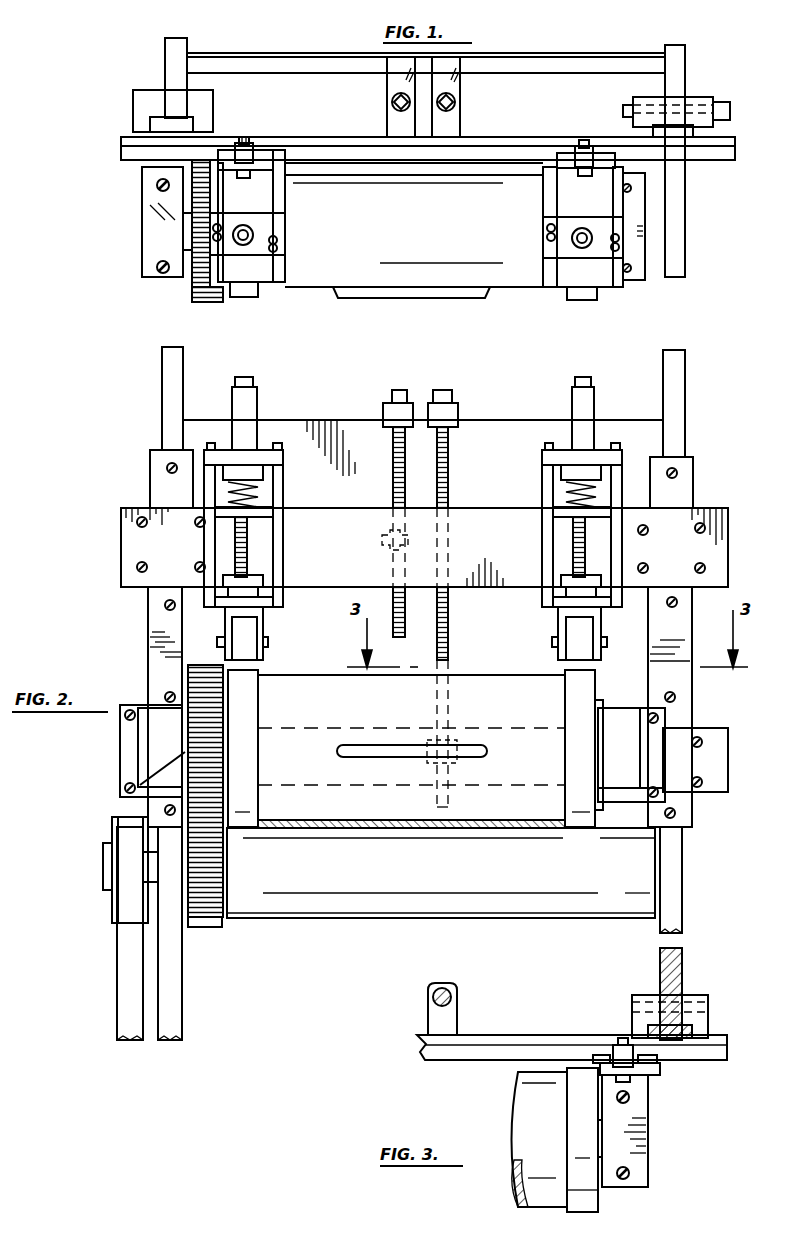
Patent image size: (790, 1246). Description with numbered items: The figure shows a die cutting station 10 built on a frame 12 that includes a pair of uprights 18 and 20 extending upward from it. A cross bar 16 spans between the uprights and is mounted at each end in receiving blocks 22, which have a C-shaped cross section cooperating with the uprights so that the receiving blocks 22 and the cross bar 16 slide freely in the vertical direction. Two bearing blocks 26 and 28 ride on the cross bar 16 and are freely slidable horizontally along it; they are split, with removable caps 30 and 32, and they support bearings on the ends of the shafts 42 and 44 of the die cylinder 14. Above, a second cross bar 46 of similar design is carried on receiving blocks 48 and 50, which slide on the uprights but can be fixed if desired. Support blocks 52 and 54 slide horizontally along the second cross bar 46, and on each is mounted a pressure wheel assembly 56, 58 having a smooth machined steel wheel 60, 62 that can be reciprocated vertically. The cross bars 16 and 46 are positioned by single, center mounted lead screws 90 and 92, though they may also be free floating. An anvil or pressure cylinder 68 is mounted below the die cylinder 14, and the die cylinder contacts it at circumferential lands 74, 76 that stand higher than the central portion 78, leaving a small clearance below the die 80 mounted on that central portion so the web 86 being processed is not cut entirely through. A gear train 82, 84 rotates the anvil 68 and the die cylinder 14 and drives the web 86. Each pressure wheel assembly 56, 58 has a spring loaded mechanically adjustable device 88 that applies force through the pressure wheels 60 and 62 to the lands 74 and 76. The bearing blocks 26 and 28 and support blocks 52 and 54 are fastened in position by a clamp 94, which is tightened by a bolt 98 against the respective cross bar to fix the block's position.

In FIG. 1, the die cutting station 10 is at (688, 44).
In FIG. 2, the die cutting station 10 is at (100, 571).
In FIG. 1, the frame 12 is at (168, 50).
In FIG. 2, the frame 12 is at (170, 372).
In FIG. 3, the frame 12 is at (665, 960).
In FIG. 1, the die cylinder 14 is at (318, 290).
In FIG. 2, the die cylinder 14 is at (300, 682).
In FIG. 3, the die cylinder 14 is at (520, 1125).
In FIG. 2, the cross bar 16 is at (728, 760).
In FIG. 3, the cross bar 16 is at (716, 1060).
In FIG. 1, the upright 18 is at (155, 118).
In FIG. 2, the upright 18 is at (155, 672).
In FIG. 1, the upright 20 is at (690, 132).
In FIG. 2, the upright 20 is at (690, 690).
In FIG. 3, the upright 20 is at (695, 1030).
In FIG. 3, the receiving block 22 is at (700, 995).
In FIG. 2, the bearing block 26 is at (620, 785).
In FIG. 3, the bearing block 26 is at (648, 1085).
In FIG. 2, the bearing block 28 is at (145, 760).
In FIG. 1, the removable cap 30 is at (147, 190).
In FIG. 2, the removable cap 30 is at (145, 733).
In FIG. 1, the removable cap 32 is at (633, 280).
In FIG. 2, the removable cap 32 is at (618, 712).
In FIG. 3, the removable cap 32 is at (640, 1120).
In FIG. 1, the shaft 42 is at (185, 230).
In FIG. 2, the shaft 42 is at (140, 785).
In FIG. 2, the shaft 44 is at (600, 750).
In FIG. 3, the shaft 44 is at (602, 1148).
In FIG. 1, the second cross bar 46 is at (359, 155).
In FIG. 2, the second cross bar 46 is at (712, 553).
In FIG. 1, the receiving block 48 is at (138, 100).
In FIG. 1, the receiving block 50 is at (698, 100).
In FIG. 1, the support block 52 is at (262, 165).
In FIG. 3, the support block 52 is at (626, 1065).
In FIG. 1, the support block 54 is at (567, 165).
In FIG. 1, the pressure wheel assembly 56 is at (287, 239).
In FIG. 2, the pressure wheel assembly 56 is at (260, 399).
In FIG. 1, the pressure wheel assembly 58 is at (541, 229).
In FIG. 2, the pressure wheel assembly 58 is at (594, 394).
In FIG. 2, the pressure wheel 60 is at (245, 625).
In FIG. 2, the pressure wheel 62 is at (557, 626).
In FIG. 2, the anvil or pressure cylinder 68 is at (312, 915).
In FIG. 1, the circumferential land 74 is at (243, 297).
In FIG. 2, the circumferential land 74 is at (252, 758).
In FIG. 1, the circumferential land 76 is at (580, 300).
In FIG. 2, the circumferential land 76 is at (578, 708).
In FIG. 2, the central portion 78 is at (472, 685).
In FIG. 1, the die 80 is at (385, 300).
In FIG. 2, the die 80 is at (365, 750).
In FIG. 2, the gear train 82 is at (210, 928).
In FIG. 1, the gear train 84 is at (195, 297).
In FIG. 2, the gear train 84 is at (195, 668).
In FIG. 2, the web 86 is at (382, 830).
In FIG. 2, the spring loaded mechanically adjustable device 88 is at (572, 394).
In FIG. 1, the lead screw 90 is at (456, 102).
In FIG. 2, the lead screw 90 is at (450, 468).
In FIG. 3, the lead screw 90 is at (432, 997).
In FIG. 1, the lead screw 92 is at (392, 102).
In FIG. 2, the lead screw 92 is at (392, 480).
In FIG. 1, the clamp 94 is at (232, 150).
In FIG. 1, the bolt 98 is at (245, 138).
In FIG. 3, the bolt 98 is at (623, 1060).